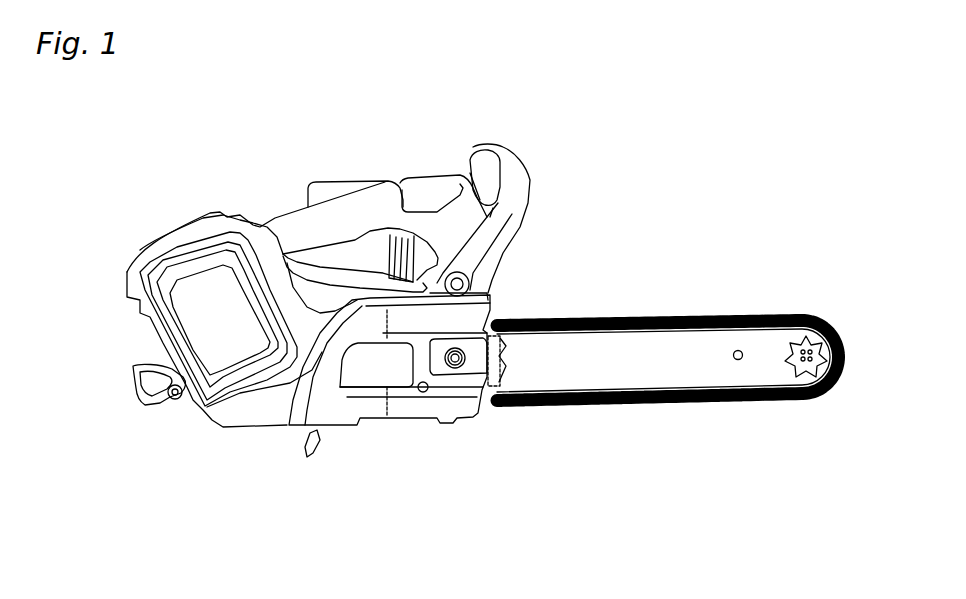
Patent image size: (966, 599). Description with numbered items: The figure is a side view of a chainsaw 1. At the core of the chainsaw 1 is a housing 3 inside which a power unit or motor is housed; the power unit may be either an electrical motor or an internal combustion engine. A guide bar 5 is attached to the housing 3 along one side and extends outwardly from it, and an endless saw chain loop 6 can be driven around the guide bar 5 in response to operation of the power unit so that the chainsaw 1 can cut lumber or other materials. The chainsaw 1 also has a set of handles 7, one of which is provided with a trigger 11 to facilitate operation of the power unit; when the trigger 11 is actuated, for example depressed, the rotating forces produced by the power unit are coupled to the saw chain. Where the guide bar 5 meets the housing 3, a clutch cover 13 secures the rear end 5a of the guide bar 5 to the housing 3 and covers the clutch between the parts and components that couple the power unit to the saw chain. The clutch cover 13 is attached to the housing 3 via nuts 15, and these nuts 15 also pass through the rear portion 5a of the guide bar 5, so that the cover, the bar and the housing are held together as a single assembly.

The chainsaw 1 is at (637, 136).
The housing 3 is at (349, 452).
The guide bar 5 is at (670, 350).
The rear end of the guide bar 5a is at (527, 353).
The endless saw chain loop 6 is at (852, 347).
The handles 7 is at (318, 230).
The trigger 11 is at (390, 230).
The clutch cover 13 is at (395, 366).
The nuts 15 is at (458, 372).